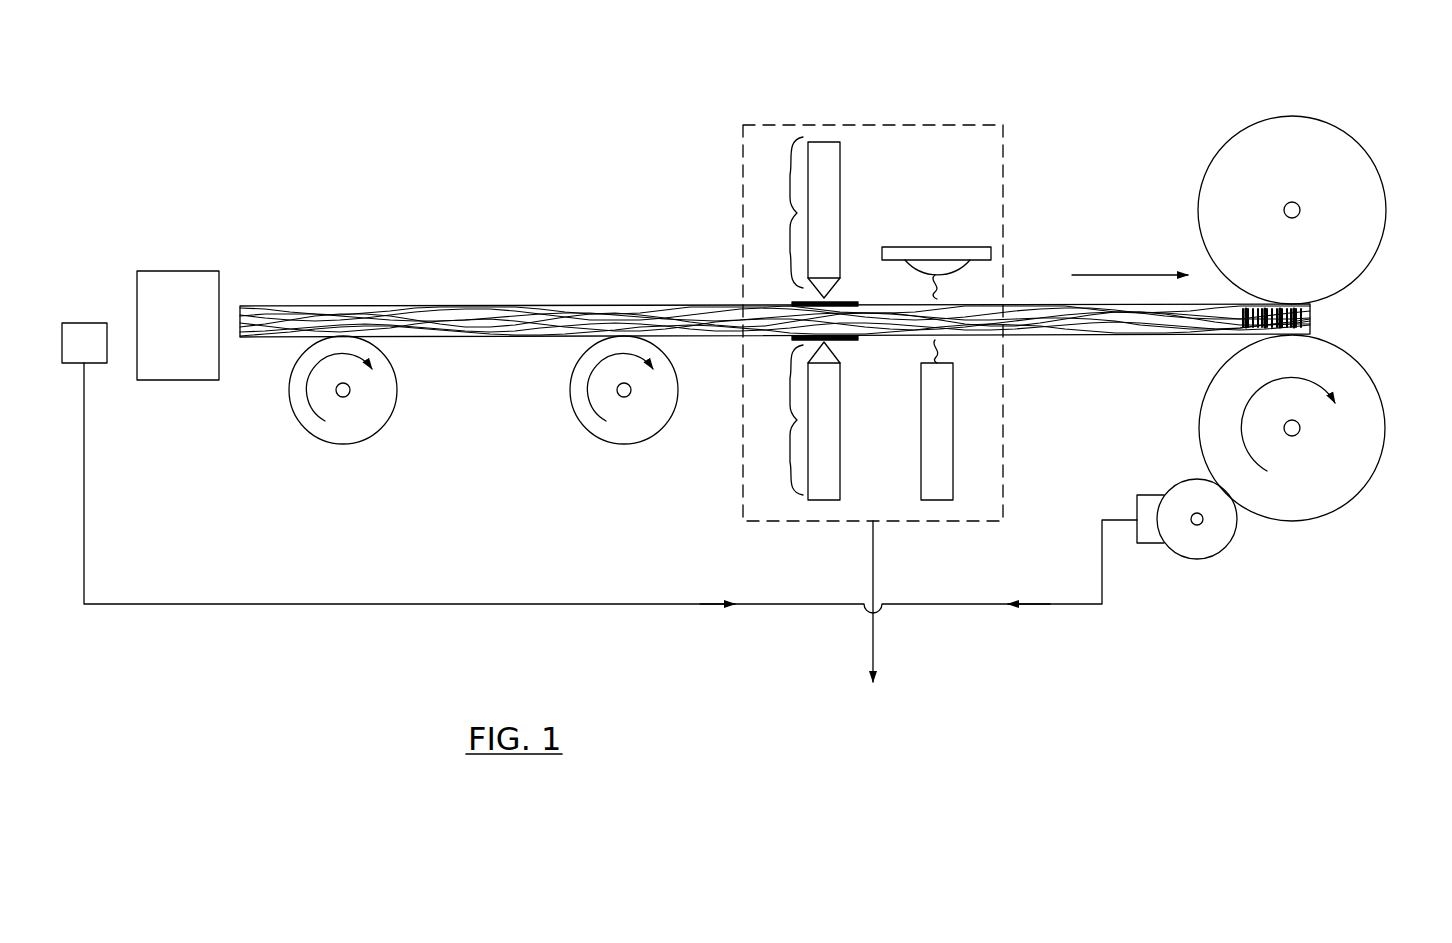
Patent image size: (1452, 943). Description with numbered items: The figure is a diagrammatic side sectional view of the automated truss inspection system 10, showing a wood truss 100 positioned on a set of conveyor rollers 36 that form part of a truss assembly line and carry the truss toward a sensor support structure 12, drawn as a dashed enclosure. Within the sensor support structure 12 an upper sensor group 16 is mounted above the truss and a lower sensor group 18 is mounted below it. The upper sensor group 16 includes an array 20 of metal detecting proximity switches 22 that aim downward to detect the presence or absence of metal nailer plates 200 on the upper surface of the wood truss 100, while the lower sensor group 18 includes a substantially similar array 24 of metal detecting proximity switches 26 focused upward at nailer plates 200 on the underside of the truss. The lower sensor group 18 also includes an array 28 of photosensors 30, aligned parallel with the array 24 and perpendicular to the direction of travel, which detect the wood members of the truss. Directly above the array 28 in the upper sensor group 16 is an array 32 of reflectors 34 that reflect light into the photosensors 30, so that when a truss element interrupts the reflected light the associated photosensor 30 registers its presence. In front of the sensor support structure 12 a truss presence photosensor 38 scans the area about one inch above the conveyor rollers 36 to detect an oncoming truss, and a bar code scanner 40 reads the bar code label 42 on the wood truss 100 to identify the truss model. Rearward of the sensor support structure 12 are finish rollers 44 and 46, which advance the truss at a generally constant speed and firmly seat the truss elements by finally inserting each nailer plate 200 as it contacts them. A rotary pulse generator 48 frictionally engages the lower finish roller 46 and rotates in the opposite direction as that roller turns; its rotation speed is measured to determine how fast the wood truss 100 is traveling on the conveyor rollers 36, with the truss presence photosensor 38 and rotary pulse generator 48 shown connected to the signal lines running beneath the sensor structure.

The automated truss inspection system 10 is at (1040, 114).
The sensor support structure 12 is at (943, 123).
The upper sensor group 16 is at (797, 213).
The lower sensor group 18 is at (797, 420).
The array of metal detecting proximity switches 20 is at (845, 198).
The metal detecting proximity switch 22 is at (823, 160).
The array of metal detecting proximity switches 24 is at (806, 464).
The metal detecting proximity switch 26 is at (827, 492).
The array of photosensors 28 is at (957, 418).
The photosensor 30 is at (938, 487).
The array of reflectors 32 is at (968, 272).
The reflector 34 is at (940, 252).
The conveyor rollers 36 is at (624, 432).
The truss presence photosensor 38 is at (82, 327).
The bar code scanner 40 is at (182, 295).
The bar code label 42 is at (1305, 318).
The finish roller 44 is at (1325, 132).
The finish roller 46 is at (1355, 470).
The rotary pulse generator 48 is at (1212, 542).
The wood truss 100 is at (517, 312).
The metal nailer plate 200 is at (800, 300).